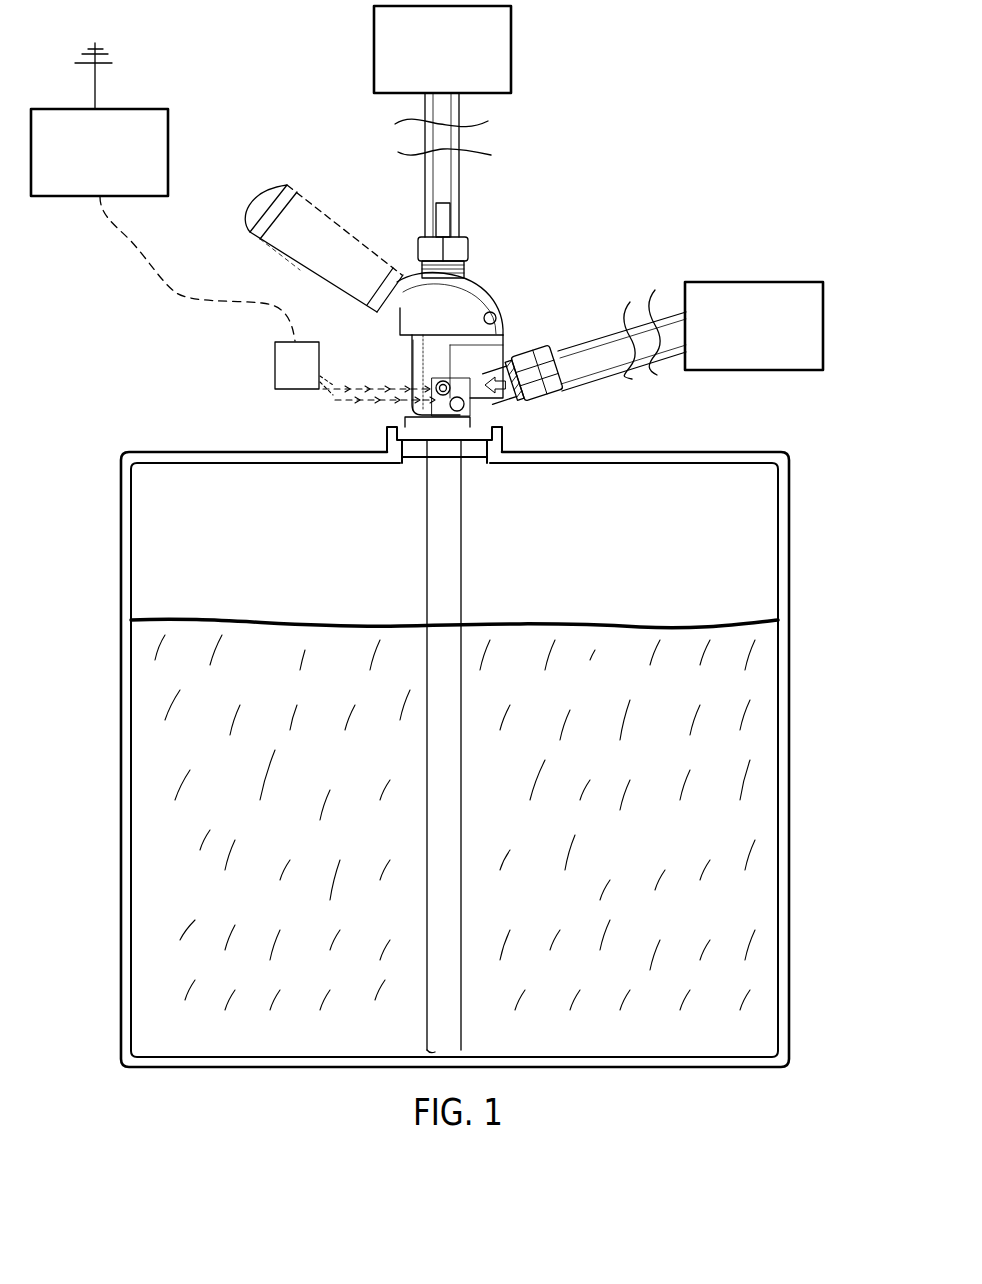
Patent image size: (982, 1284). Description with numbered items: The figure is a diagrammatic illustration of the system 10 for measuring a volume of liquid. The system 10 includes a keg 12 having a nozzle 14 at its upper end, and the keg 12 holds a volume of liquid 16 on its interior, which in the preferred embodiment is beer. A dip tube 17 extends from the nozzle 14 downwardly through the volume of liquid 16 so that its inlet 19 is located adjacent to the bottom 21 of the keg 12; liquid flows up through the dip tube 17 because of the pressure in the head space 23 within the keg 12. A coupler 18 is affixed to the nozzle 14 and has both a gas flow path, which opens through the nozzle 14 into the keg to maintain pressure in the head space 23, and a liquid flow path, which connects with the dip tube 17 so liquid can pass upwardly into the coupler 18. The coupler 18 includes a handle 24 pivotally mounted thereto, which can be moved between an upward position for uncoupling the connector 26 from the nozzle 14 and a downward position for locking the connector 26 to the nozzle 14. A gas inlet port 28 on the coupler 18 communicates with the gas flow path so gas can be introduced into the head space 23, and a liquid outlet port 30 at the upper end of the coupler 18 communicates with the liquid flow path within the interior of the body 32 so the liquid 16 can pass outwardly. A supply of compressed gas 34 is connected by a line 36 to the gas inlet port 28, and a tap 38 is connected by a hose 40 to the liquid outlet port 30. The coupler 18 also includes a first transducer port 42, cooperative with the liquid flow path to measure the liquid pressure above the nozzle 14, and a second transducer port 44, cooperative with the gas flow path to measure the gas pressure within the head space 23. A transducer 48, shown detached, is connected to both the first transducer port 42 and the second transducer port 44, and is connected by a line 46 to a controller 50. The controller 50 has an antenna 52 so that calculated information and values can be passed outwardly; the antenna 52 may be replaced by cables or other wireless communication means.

The system 10 is at (630, 292).
The keg 12 is at (781, 522).
The nozzle 14 is at (392, 447).
The volume of liquid 16 is at (288, 652).
The dip tube 17 is at (455, 567).
The coupler 18 is at (470, 286).
The inlet 19 is at (440, 1042).
The bottom 21 is at (534, 1055).
The head space 23 is at (630, 566).
The handle 24 is at (320, 233).
The connector 26 is at (404, 425).
The gas inlet port 28 is at (586, 364).
The liquid outlet port 30 is at (447, 217).
The body 32 is at (425, 356).
The supply of compressed gas 34 is at (788, 296).
The line 36 is at (633, 370).
The tap 38 is at (493, 70).
The hose 40 is at (461, 172).
The first transducer port 42 is at (443, 373).
The second transducer port 44 is at (398, 392).
The line 46 is at (170, 277).
The transducer 48 is at (275, 362).
The controller 50 is at (160, 130).
The antenna 52 is at (97, 88).